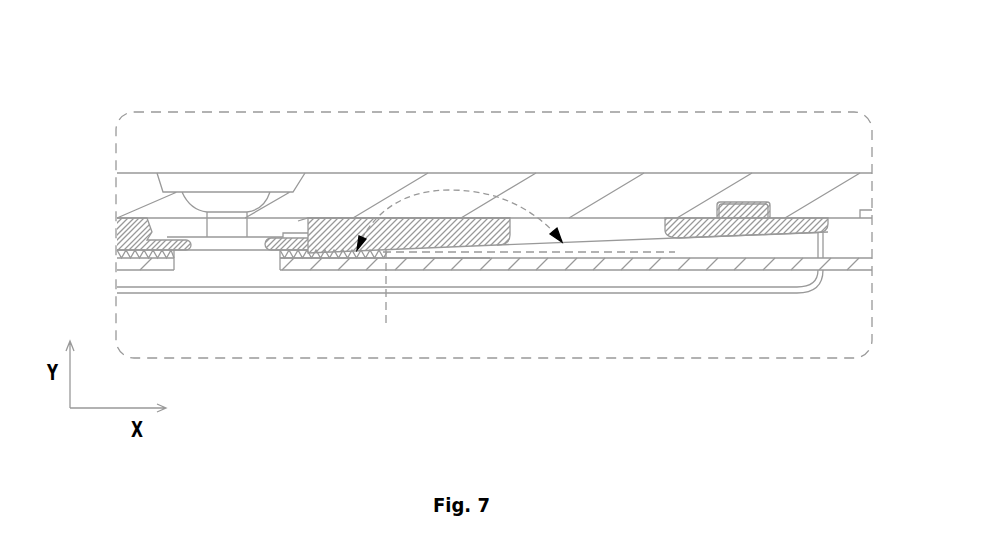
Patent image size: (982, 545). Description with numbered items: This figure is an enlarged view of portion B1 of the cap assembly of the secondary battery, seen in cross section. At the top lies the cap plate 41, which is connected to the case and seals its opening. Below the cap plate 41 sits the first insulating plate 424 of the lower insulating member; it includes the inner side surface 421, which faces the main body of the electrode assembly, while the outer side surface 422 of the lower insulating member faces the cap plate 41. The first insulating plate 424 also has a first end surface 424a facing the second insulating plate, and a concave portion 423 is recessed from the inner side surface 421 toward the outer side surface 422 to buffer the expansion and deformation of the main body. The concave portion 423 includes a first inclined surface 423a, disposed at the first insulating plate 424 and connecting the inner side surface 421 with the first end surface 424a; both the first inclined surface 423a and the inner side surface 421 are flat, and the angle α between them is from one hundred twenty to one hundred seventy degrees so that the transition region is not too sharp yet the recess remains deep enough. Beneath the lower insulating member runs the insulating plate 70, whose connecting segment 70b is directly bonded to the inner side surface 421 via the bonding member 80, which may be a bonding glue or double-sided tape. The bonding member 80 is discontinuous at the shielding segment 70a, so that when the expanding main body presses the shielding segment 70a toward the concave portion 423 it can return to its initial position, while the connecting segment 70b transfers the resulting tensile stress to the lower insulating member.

The portion B1 is at (521, 33).
The cap plate 41 is at (560, 185).
The bonding member 80 is at (136, 251).
The inner side surface 421 is at (327, 251).
The outer side surface 422 is at (366, 218).
The concave portion 423 is at (853, 246).
The first inclined surface 423a is at (715, 246).
The first insulating plate 424 is at (330, 232).
The first end surface 424a is at (832, 227).
The insulating plate 70 is at (562, 262).
The shielding segment 70a is at (386, 316).
The connecting segment 70b is at (377, 319).